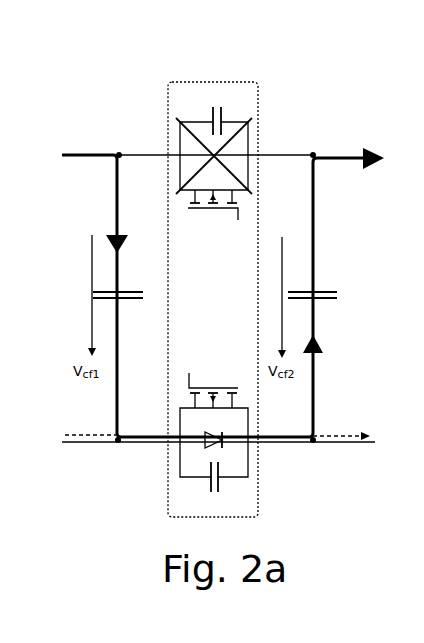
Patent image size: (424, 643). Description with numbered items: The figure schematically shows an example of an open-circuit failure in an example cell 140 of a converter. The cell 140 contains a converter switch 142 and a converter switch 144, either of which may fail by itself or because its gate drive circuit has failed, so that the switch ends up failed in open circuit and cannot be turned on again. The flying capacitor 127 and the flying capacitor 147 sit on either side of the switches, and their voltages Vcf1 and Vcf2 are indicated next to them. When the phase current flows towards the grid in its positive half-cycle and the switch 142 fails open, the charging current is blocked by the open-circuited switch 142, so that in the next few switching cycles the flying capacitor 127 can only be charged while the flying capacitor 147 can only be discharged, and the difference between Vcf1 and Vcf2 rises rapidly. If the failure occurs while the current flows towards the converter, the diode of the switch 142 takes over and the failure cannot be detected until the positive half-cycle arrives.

The cell 140 is at (306, 110).
The converter switch 142 is at (214, 154).
The converter switch 144 is at (215, 439).
The flying capacitor 127 is at (125, 282).
The flying capacitor 147 is at (322, 283).